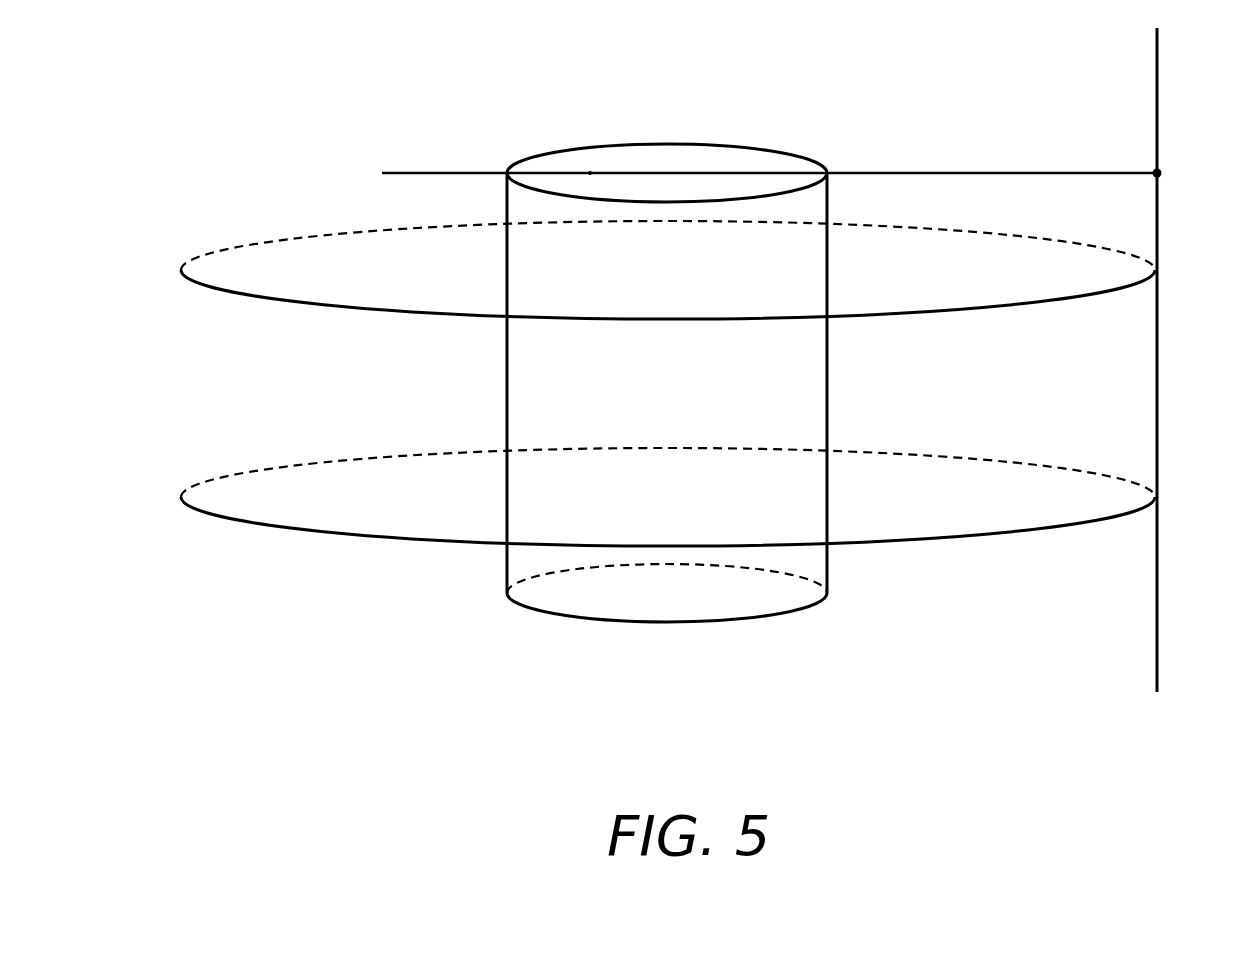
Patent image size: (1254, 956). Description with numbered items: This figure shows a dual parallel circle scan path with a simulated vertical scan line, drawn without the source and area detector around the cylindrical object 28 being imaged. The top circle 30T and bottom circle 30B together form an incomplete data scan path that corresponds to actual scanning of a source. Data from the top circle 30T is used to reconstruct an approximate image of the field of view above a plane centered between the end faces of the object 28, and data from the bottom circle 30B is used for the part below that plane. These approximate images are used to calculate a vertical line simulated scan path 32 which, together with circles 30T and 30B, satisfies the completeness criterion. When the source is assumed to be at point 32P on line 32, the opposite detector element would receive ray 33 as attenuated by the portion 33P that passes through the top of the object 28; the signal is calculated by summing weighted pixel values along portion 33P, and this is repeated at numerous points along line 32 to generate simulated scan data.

The object 28 is at (693, 144).
The top circle 30T is at (222, 290).
The bottom circle 30B is at (228, 518).
The vertical line simulated scan path 32 is at (1158, 393).
The point 32P is at (1160, 173).
The ray 33 is at (1038, 173).
The portion of ray 33P is at (590, 173).